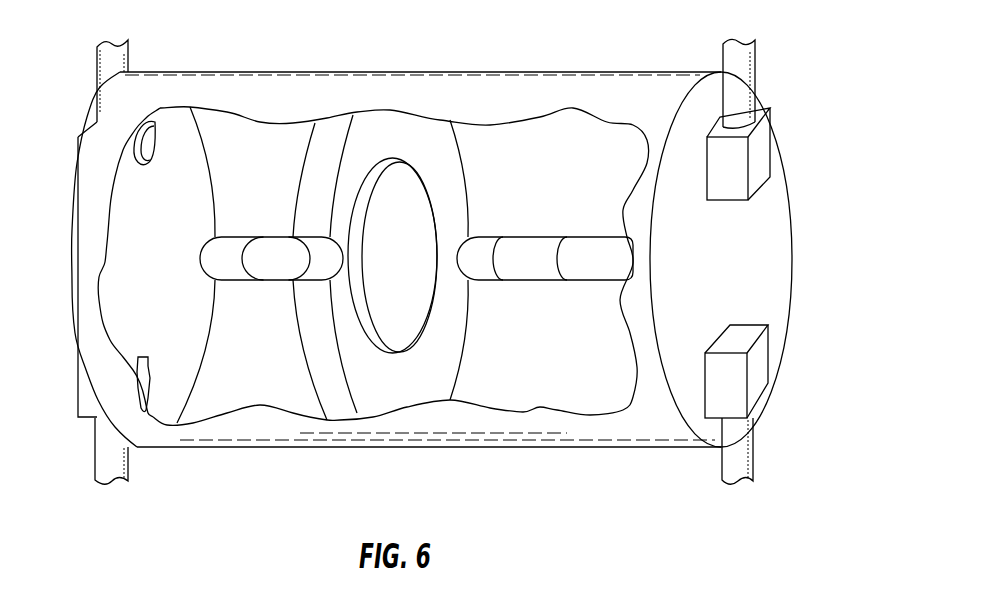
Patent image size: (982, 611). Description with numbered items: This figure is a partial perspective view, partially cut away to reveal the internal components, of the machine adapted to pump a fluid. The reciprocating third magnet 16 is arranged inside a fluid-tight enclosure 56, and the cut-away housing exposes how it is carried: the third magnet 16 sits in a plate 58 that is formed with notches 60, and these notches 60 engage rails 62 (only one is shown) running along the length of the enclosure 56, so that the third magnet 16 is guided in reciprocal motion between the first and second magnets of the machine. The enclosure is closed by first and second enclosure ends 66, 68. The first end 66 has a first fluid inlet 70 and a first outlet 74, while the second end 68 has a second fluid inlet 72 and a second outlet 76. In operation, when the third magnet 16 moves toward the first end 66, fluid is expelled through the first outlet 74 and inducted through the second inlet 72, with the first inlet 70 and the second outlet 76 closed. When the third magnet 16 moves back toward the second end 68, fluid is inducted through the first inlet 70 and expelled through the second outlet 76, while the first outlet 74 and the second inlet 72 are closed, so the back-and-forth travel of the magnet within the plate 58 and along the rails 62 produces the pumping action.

The third magnet 16 is at (403, 207).
The fluid-tight enclosure 56 is at (307, 88).
The plate 58 is at (385, 385).
The notches 60 is at (318, 272).
The rails 62 is at (538, 265).
The first enclosure end 66 is at (140, 284).
The second enclosure end 68 is at (715, 283).
The first fluid inlet 70 is at (147, 390).
The second fluid inlet 72 is at (758, 365).
The first outlet 74 is at (148, 137).
The second outlet 76 is at (758, 148).